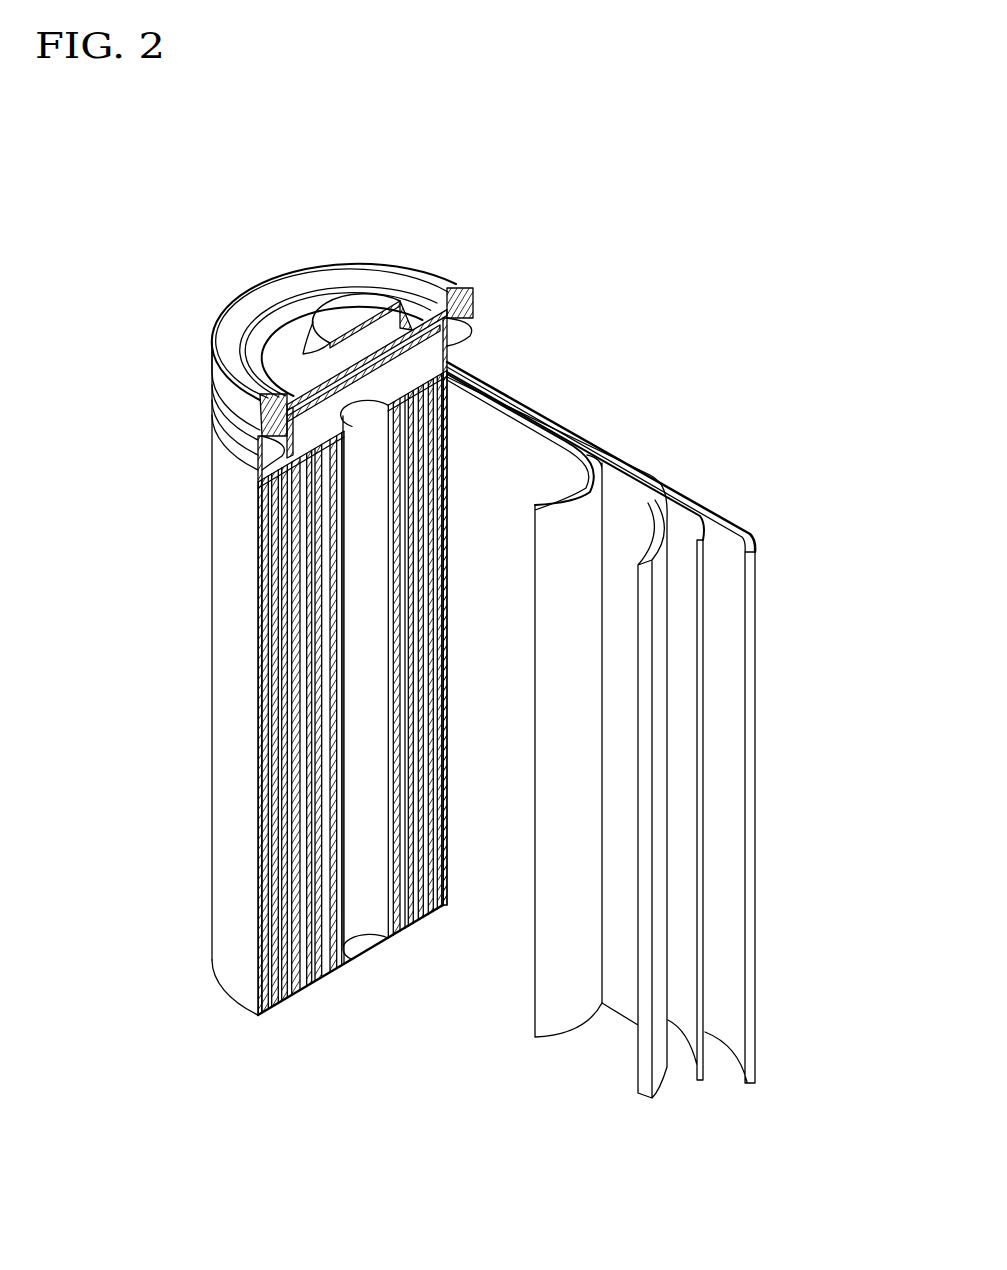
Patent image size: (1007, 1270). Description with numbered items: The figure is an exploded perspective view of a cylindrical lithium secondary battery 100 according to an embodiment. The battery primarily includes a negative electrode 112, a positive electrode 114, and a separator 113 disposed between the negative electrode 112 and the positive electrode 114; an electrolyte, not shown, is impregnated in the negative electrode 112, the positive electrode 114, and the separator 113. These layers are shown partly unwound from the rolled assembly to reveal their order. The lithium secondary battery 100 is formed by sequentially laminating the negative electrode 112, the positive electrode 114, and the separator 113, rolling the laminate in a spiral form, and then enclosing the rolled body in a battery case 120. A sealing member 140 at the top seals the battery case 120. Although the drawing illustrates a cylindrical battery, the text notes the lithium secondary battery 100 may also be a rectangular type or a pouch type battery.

The lithium secondary battery 100 is at (425, 201).
The negative electrode 112 is at (737, 525).
The separator 113 is at (586, 458).
The positive electrode 114 is at (657, 513).
The battery case 120 is at (220, 685).
The sealing member 140 is at (338, 305).